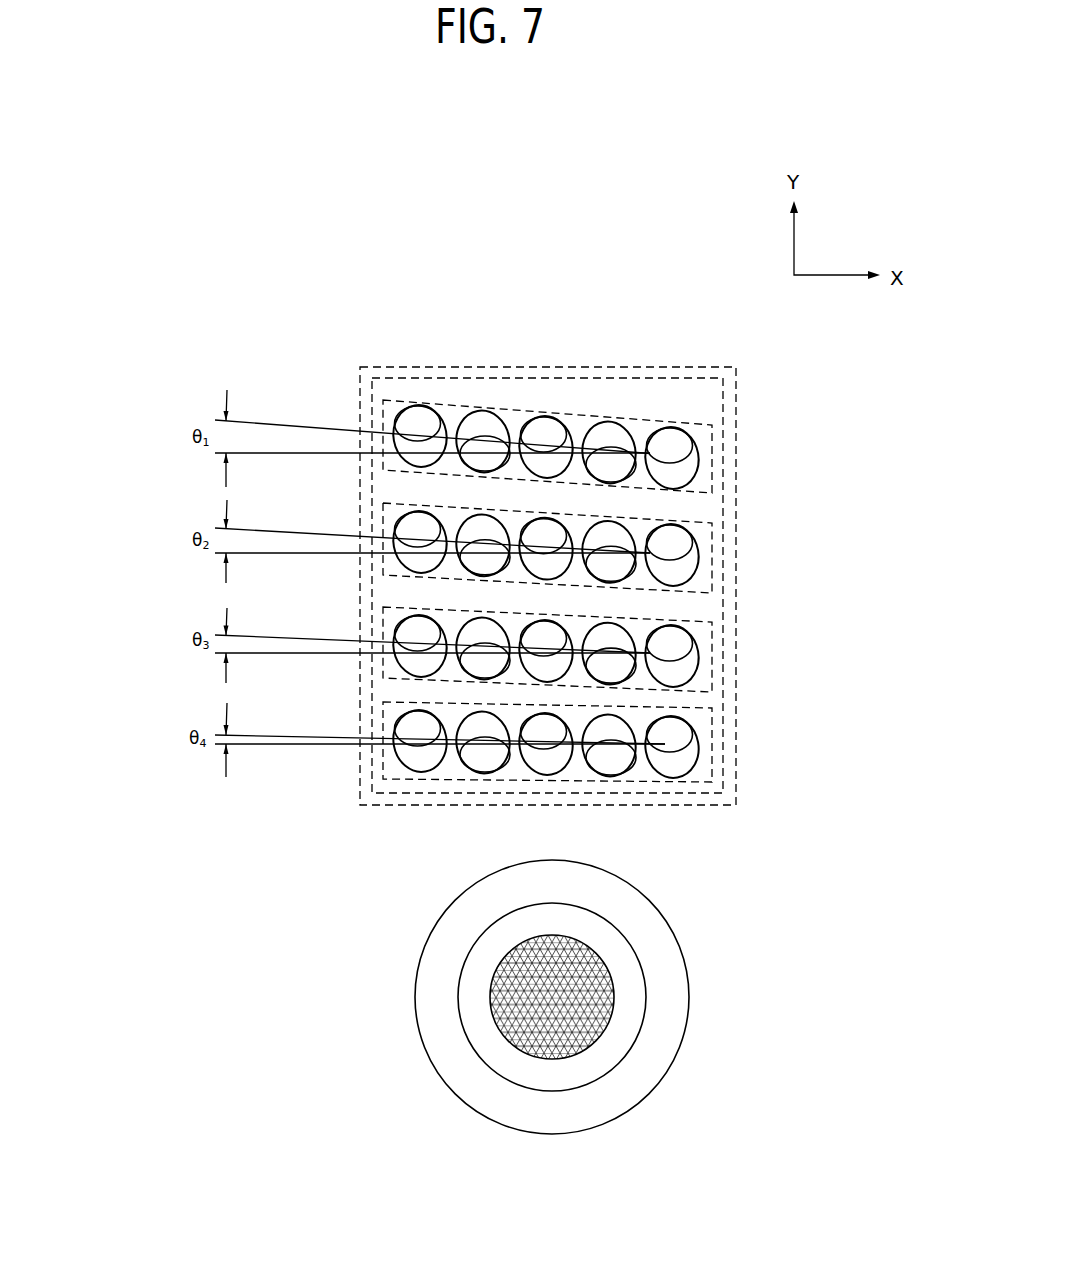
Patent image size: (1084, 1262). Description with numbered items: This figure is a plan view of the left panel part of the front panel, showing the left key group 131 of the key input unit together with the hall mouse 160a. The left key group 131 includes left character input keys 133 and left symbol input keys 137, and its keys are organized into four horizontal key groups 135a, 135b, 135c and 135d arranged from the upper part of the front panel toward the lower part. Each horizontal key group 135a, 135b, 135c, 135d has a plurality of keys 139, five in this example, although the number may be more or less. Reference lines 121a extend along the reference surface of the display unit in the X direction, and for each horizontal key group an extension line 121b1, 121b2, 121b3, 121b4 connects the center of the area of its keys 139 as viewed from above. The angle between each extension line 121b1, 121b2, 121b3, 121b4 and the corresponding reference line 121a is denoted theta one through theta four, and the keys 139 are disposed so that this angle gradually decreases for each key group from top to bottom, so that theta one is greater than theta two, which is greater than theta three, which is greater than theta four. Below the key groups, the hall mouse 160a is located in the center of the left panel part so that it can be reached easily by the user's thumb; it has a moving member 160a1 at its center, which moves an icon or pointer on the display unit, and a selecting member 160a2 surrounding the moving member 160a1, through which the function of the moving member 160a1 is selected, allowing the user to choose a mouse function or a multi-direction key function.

The reference line 121a is at (293, 455).
The extension line of the first horizontal key group 121b1 is at (272, 424).
The extension line of the second horizontal key group 121b2 is at (272, 531).
The extension line of the third horizontal key group 121b3 is at (270, 637).
The extension line of the fourth horizontal key group 121b4 is at (264, 736).
The left key group 131 is at (433, 367).
The left character input keys 133 is at (533, 378).
The first horizontal key group 135a is at (712, 455).
The second horizontal key group 135b is at (712, 556).
The third horizontal key group 135c is at (712, 655).
The fourth horizontal key group 135d is at (712, 735).
The left symbol input keys 137 is at (713, 793).
The key 139 is at (548, 424).
The hall mouse 160a is at (467, 997).
The moving member 160a1 is at (492, 1008).
The selecting member 160a2 is at (430, 942).